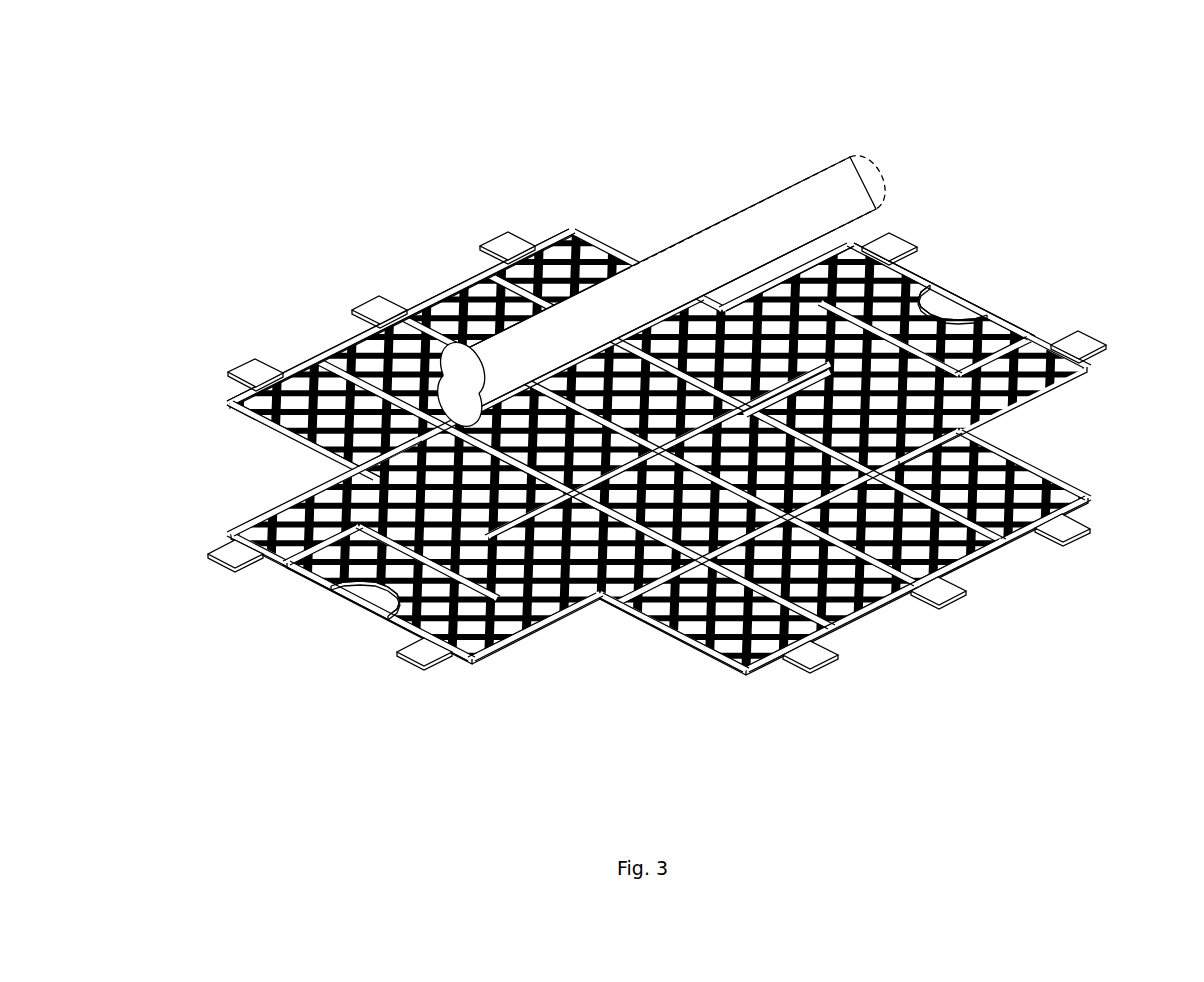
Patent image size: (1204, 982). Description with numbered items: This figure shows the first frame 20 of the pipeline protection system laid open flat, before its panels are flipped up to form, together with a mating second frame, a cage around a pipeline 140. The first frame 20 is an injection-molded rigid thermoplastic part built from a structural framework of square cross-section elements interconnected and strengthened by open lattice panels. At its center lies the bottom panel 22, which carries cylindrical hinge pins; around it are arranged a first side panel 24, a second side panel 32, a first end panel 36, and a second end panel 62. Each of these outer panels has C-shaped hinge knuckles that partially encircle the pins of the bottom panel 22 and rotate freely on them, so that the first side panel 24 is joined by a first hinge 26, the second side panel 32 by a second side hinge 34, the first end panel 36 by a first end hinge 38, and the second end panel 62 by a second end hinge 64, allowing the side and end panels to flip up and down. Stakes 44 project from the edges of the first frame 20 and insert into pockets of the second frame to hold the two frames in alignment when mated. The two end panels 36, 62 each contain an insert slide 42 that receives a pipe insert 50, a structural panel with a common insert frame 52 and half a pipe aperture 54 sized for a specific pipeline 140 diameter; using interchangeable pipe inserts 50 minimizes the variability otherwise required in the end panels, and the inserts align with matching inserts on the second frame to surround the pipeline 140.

The first frame 20 is at (1104, 458).
The bottom panel 22 is at (972, 442).
The first side panel 24 is at (885, 606).
The first hinge 26 is at (655, 582).
The second side panel 32 is at (347, 336).
The second side hinge 34 is at (372, 440).
The first end panel 36 is at (262, 530).
The first end hinge 38 is at (342, 481).
The insert slide 42 is at (1060, 334).
The stake 44 is at (511, 236).
The pipe insert 50 is at (258, 657).
The insert frame 52 is at (418, 630).
The pipe aperture 54 is at (372, 592).
The second end panel 62 is at (1062, 370).
The second end hinge 64 is at (754, 288).
The pipeline 140 is at (860, 176).